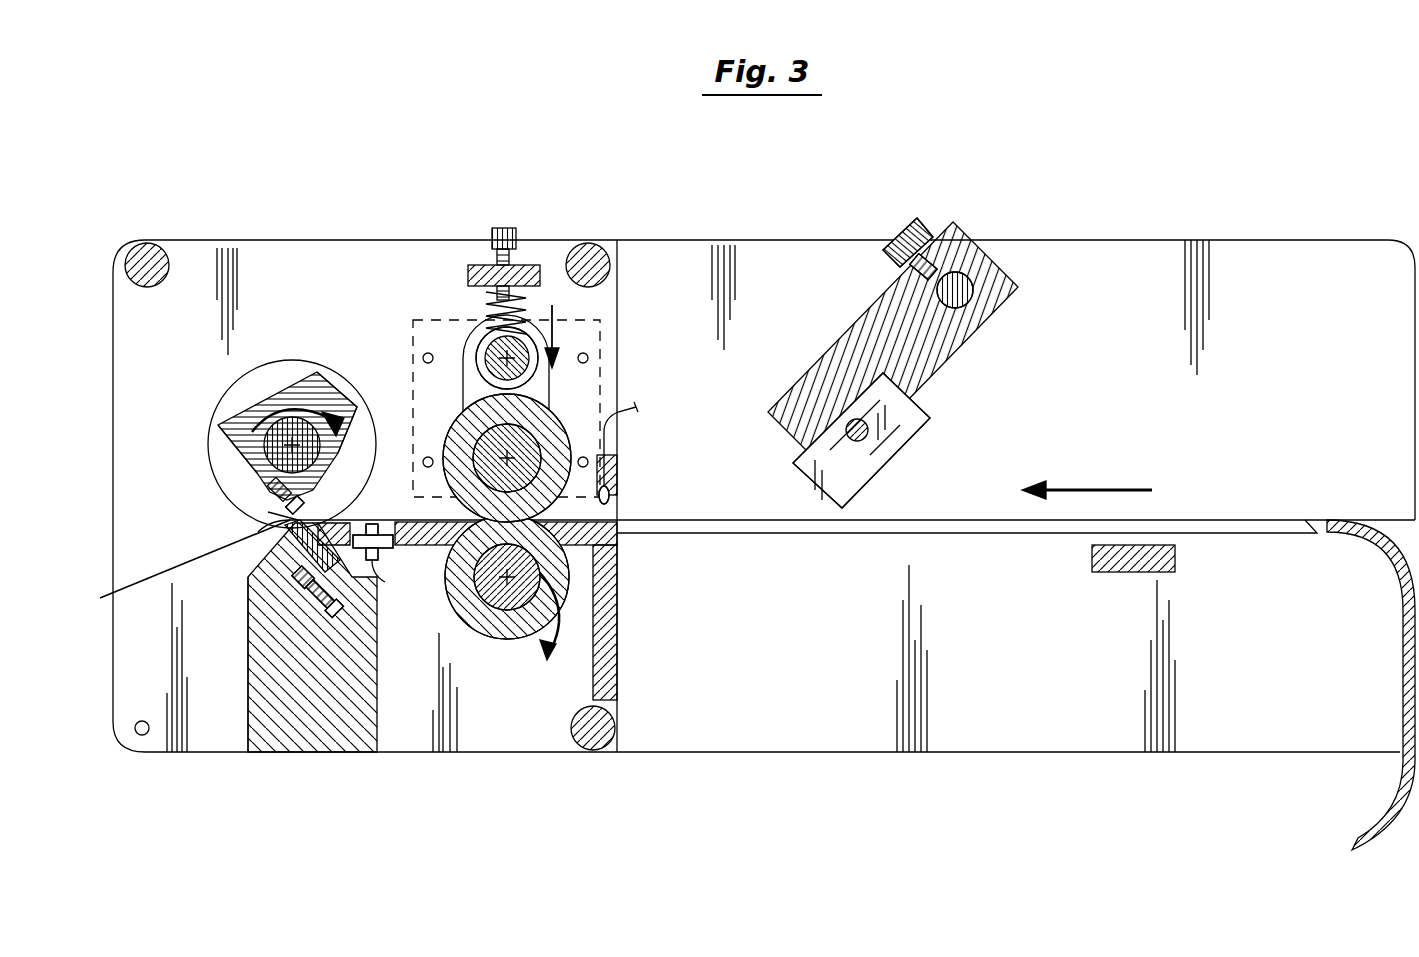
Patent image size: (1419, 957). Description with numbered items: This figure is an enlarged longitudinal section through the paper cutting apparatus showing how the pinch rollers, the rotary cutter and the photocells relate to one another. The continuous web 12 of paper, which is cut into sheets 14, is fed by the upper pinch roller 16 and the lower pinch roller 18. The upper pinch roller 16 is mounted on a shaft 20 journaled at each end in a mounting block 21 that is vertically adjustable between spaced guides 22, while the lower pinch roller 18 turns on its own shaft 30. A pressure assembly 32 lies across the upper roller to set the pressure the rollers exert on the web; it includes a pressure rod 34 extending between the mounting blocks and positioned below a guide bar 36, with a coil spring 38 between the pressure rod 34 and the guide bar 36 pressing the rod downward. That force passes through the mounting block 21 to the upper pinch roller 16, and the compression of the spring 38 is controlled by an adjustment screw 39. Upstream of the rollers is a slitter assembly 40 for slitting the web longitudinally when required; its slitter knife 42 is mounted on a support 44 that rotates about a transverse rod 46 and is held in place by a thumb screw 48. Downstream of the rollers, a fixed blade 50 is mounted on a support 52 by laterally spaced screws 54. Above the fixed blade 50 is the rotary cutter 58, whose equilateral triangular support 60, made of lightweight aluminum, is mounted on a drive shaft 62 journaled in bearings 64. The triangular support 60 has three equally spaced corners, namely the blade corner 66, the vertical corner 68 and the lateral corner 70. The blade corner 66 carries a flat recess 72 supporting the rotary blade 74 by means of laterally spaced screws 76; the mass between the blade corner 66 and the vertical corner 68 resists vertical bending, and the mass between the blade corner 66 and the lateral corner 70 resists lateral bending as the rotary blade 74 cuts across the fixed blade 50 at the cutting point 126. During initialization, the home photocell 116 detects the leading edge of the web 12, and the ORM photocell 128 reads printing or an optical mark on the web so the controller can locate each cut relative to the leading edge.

The continuous web 12 is at (1385, 520).
The sheets 14 is at (137, 578).
The upper pinch roller 16 is at (545, 440).
The lower pinch roller 18 is at (510, 632).
The shaft 20 is at (528, 462).
The mounting block 21 is at (566, 248).
The guides 22 is at (585, 340).
The shaft 30 is at (493, 622).
The pressure assembly 32 is at (464, 264).
The pressure rod 34 is at (490, 362).
The guide bar 36 is at (535, 325).
The coil spring 38 is at (485, 312).
The adjustment screw 39 is at (504, 228).
The slitter assembly 40 is at (831, 322).
The slitter knife 42 is at (910, 425).
The support 44 is at (880, 330).
The transverse rod 46 is at (1013, 278).
The thumb screw 48 is at (920, 235).
The fixed blade 50 is at (262, 578).
The support 52 is at (285, 710).
The screws 54 is at (358, 645).
The rotary cutter 58 is at (284, 360).
The equilateral triangular support 60 is at (298, 378).
The drive shaft 62 is at (318, 452).
The bearings 64 is at (232, 397).
The blade corner 66 is at (332, 522).
The vertical corner 68 is at (228, 422).
The lateral corner 70 is at (327, 400).
The flat recess 72 is at (262, 488).
The rotary blade 74 is at (262, 515).
The screws 76 is at (245, 520).
The home photocell 116 is at (392, 552).
The cutting point 126 is at (262, 530).
The ORM photocell 128 is at (610, 490).